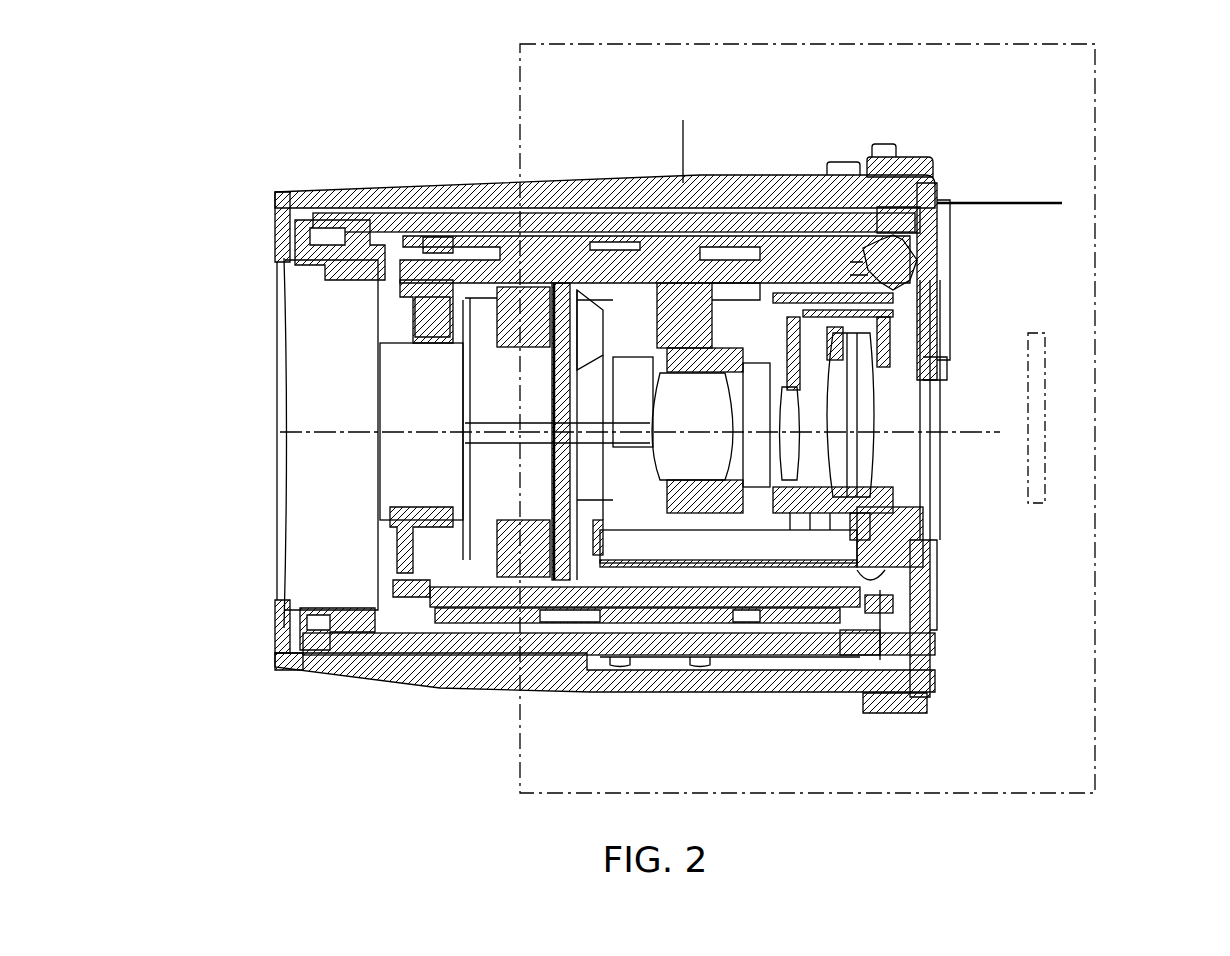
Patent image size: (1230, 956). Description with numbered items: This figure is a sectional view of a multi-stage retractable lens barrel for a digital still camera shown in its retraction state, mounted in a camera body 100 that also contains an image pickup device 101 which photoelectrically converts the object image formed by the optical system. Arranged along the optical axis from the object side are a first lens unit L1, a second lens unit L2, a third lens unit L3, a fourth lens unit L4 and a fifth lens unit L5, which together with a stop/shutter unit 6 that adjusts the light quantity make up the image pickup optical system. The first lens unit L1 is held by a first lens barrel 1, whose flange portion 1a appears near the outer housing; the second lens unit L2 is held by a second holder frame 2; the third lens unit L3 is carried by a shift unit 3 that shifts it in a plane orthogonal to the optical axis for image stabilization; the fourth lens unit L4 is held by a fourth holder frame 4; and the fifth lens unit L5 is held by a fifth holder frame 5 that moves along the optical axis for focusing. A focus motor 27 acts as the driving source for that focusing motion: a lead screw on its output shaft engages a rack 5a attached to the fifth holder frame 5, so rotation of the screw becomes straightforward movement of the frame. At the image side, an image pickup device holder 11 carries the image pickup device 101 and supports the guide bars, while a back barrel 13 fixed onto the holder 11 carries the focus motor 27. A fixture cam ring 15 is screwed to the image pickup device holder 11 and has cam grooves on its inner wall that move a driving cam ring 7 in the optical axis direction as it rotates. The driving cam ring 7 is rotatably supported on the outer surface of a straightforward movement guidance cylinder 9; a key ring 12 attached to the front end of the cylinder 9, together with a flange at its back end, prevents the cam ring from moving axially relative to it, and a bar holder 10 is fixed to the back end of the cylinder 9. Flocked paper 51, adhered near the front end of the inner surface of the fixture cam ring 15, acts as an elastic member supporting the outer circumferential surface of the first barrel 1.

The first lens barrel 1 is at (493, 212).
The flange portion of lens barrel 1a is at (790, 237).
The second holder frame 2 is at (410, 547).
The shift unit 3 is at (660, 320).
The fourth holder frame 4 is at (797, 342).
The fifth holder frame 5 is at (843, 493).
The rack 5a is at (863, 602).
The stop/shutter unit 6 is at (553, 458).
The driving cam ring 7 is at (580, 627).
The straightforward movement guidance cylinder 9 is at (490, 600).
The bar holder 10 is at (913, 233).
The image pickup device holder 11 is at (930, 647).
The key ring 12 is at (413, 617).
The back barrel 13 is at (900, 307).
The fixture cam ring 15 is at (582, 185).
The focus motor 27 is at (900, 542).
The flocked paper 51 is at (293, 677).
The camera body 100 is at (1097, 93).
The image pickup device 101 is at (1046, 336).
The first lens unit L1 is at (331, 443).
The second lens unit L2 is at (421, 430).
The third lens unit L3 is at (692, 426).
The fourth lens unit L4 is at (786, 474).
The fifth lens unit L5 is at (830, 425).